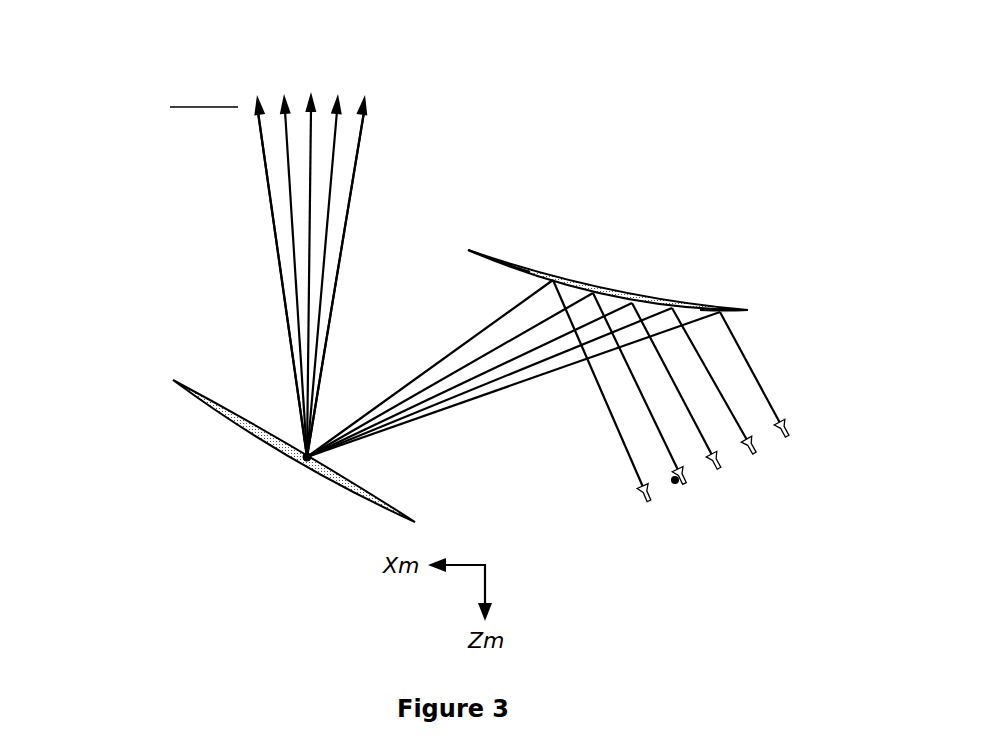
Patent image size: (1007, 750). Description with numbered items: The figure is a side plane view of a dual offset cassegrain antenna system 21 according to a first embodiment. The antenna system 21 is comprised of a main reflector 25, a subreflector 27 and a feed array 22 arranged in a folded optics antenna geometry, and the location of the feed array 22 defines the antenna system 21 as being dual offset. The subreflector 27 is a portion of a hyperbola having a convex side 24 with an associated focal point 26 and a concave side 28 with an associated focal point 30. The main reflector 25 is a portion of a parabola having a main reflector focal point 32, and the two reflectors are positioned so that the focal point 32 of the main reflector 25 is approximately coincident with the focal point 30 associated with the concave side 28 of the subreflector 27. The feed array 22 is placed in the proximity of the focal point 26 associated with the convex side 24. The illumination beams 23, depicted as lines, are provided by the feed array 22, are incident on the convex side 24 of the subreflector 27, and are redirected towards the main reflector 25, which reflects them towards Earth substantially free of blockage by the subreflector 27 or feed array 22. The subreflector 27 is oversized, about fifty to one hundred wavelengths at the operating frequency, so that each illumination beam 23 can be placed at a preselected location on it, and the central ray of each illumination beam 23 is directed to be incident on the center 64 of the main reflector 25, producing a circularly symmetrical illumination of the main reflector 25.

The antenna system 21 is at (63, 40).
The feed array 22 is at (798, 417).
The illumination beams 23 is at (530, 452).
The convex side 24 is at (740, 315).
The main reflector 25 is at (172, 392).
The focal point 26 is at (680, 488).
The subreflector 27 is at (475, 243).
The concave side 28 is at (738, 300).
The focal point 30 is at (353, 268).
The main reflector focal point 32 is at (311, 284).
The center 64 is at (293, 465).